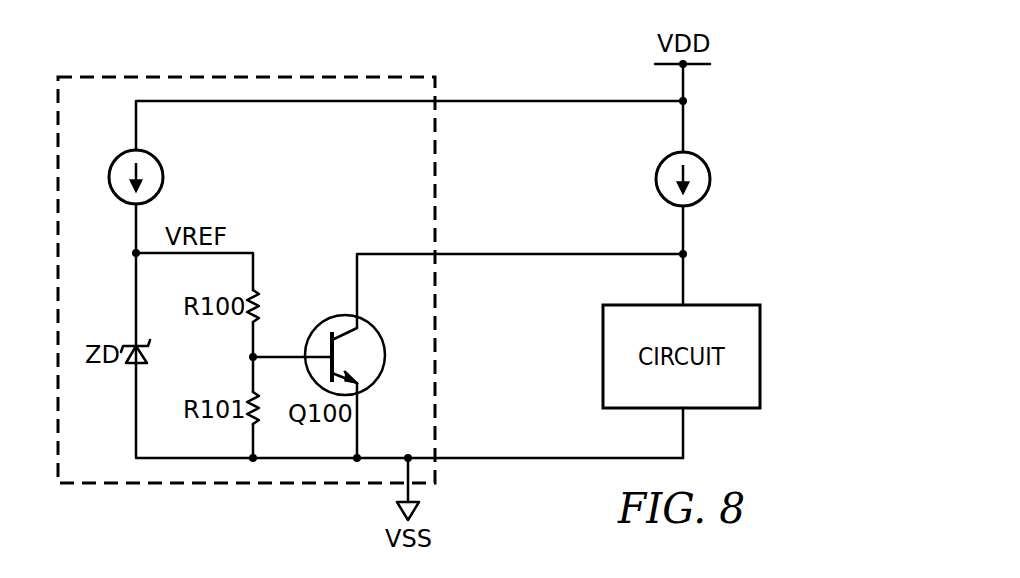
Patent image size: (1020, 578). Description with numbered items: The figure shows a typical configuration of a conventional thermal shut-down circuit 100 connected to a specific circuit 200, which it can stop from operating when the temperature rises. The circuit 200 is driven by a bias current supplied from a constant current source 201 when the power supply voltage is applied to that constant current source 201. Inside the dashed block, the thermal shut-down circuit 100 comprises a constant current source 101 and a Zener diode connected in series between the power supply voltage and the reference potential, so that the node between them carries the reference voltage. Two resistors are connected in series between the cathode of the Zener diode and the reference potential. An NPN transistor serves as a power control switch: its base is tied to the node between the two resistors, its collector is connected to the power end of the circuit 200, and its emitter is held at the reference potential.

The thermal shut-down circuit 100 is at (184, 76).
The constant current source 101 is at (163, 177).
The circuit 200 is at (760, 358).
The constant current source 201 is at (710, 178).